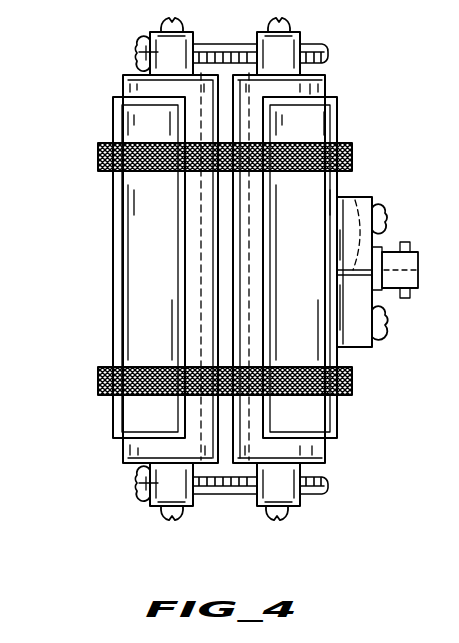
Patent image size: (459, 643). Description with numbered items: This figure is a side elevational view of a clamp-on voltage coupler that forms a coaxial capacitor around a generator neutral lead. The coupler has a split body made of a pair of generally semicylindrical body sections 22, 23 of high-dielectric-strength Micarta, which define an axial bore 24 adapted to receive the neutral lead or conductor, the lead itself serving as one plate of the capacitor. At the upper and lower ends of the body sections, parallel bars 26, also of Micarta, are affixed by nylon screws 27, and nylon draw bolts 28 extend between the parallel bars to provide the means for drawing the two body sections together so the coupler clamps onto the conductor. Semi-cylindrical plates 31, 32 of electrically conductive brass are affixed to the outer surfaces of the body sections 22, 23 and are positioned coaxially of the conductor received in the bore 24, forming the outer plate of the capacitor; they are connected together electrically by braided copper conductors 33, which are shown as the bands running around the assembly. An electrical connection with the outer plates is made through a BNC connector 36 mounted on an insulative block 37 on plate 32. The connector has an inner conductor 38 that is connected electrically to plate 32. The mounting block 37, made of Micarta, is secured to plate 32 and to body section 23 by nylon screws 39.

The body section 22 is at (123, 452).
The body section 23 is at (326, 78).
The axial bore 24 is at (200, 262).
The parallel bars 26 is at (137, 60).
The screws 27 is at (160, 19).
The draw bolts 28 is at (328, 50).
The semi-cylindrical plate 31 is at (150, 205).
The semi-cylindrical plate 32 is at (290, 318).
The braided copper conductors 33 is at (97, 157).
The BNC connector 36 is at (380, 250).
The insulative block 37 is at (356, 346).
The inner conductor 38 is at (349, 202).
The screws 39 is at (378, 338).